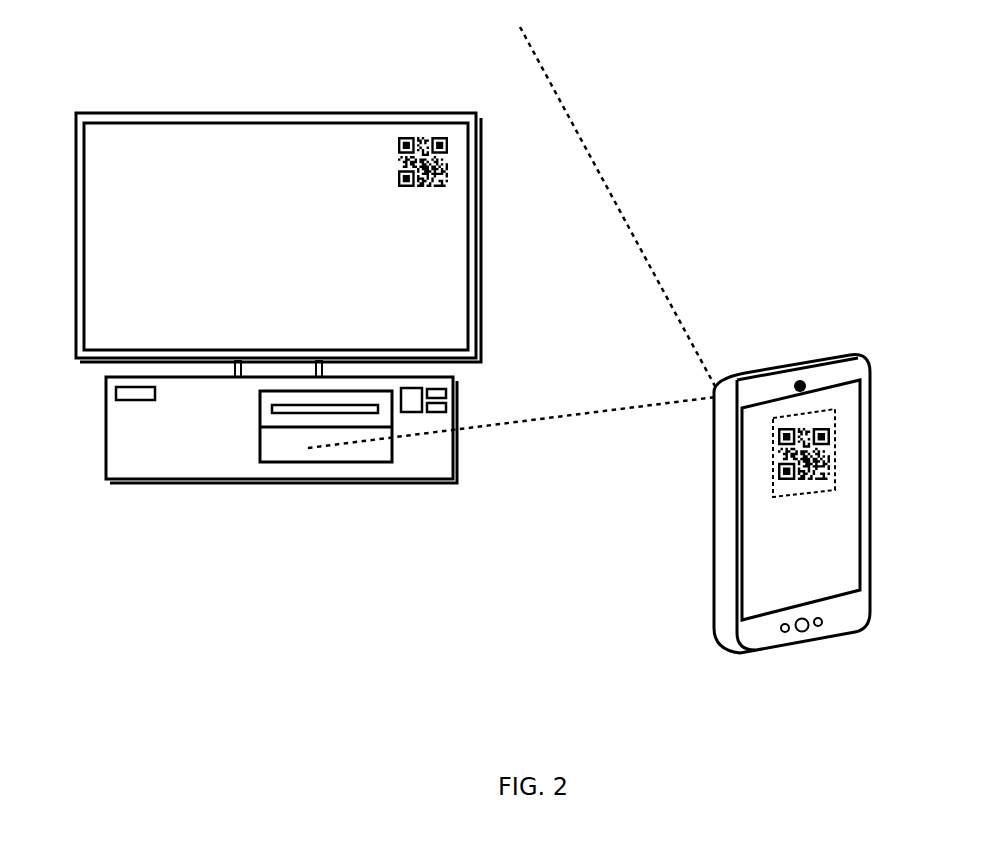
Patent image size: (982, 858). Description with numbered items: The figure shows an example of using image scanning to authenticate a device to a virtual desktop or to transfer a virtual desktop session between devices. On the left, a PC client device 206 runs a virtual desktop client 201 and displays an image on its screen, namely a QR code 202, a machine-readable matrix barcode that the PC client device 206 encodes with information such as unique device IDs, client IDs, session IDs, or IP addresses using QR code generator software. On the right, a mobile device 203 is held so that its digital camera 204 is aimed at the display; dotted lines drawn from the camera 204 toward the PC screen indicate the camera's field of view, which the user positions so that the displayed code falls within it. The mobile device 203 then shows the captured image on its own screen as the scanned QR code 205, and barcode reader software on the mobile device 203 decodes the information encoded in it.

The virtual desktop client 201 is at (278, 245).
The QR code 202 is at (428, 134).
The mobile device 203 is at (713, 530).
The digital camera 204 is at (736, 378).
The scanned QR code 205 is at (837, 447).
The PC client device 206 is at (105, 423).